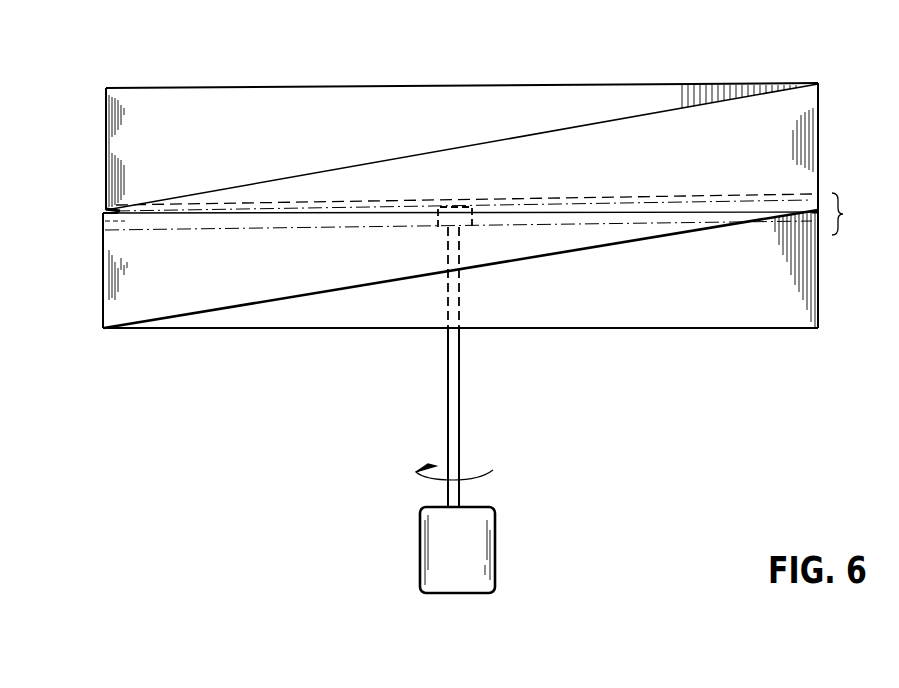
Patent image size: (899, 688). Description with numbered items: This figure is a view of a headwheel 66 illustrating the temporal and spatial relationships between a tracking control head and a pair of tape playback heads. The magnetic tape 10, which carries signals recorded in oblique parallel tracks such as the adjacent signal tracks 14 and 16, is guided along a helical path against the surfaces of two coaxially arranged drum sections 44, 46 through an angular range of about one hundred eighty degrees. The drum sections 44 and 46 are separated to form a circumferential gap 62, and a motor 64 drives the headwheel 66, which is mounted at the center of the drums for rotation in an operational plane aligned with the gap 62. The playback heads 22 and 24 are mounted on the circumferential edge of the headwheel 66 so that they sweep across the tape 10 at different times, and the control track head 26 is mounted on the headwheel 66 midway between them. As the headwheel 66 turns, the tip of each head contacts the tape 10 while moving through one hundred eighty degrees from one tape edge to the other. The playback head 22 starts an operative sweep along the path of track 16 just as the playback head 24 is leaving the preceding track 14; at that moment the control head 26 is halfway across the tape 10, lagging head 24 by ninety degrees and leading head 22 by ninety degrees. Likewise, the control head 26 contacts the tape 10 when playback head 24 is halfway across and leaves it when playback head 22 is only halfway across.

The magnetic tape 10 is at (610, 120).
The signal track 14 is at (245, 215).
The signal track 16 is at (308, 197).
The playback head 22 is at (806, 207).
The playback head 24 is at (100, 208).
The control track head 26 is at (455, 207).
The drum section 44 is at (352, 120).
The drum section 46 is at (387, 312).
The circumferential gap 62 is at (848, 214).
The motor 64 is at (470, 578).
The headwheel 66 is at (106, 210).